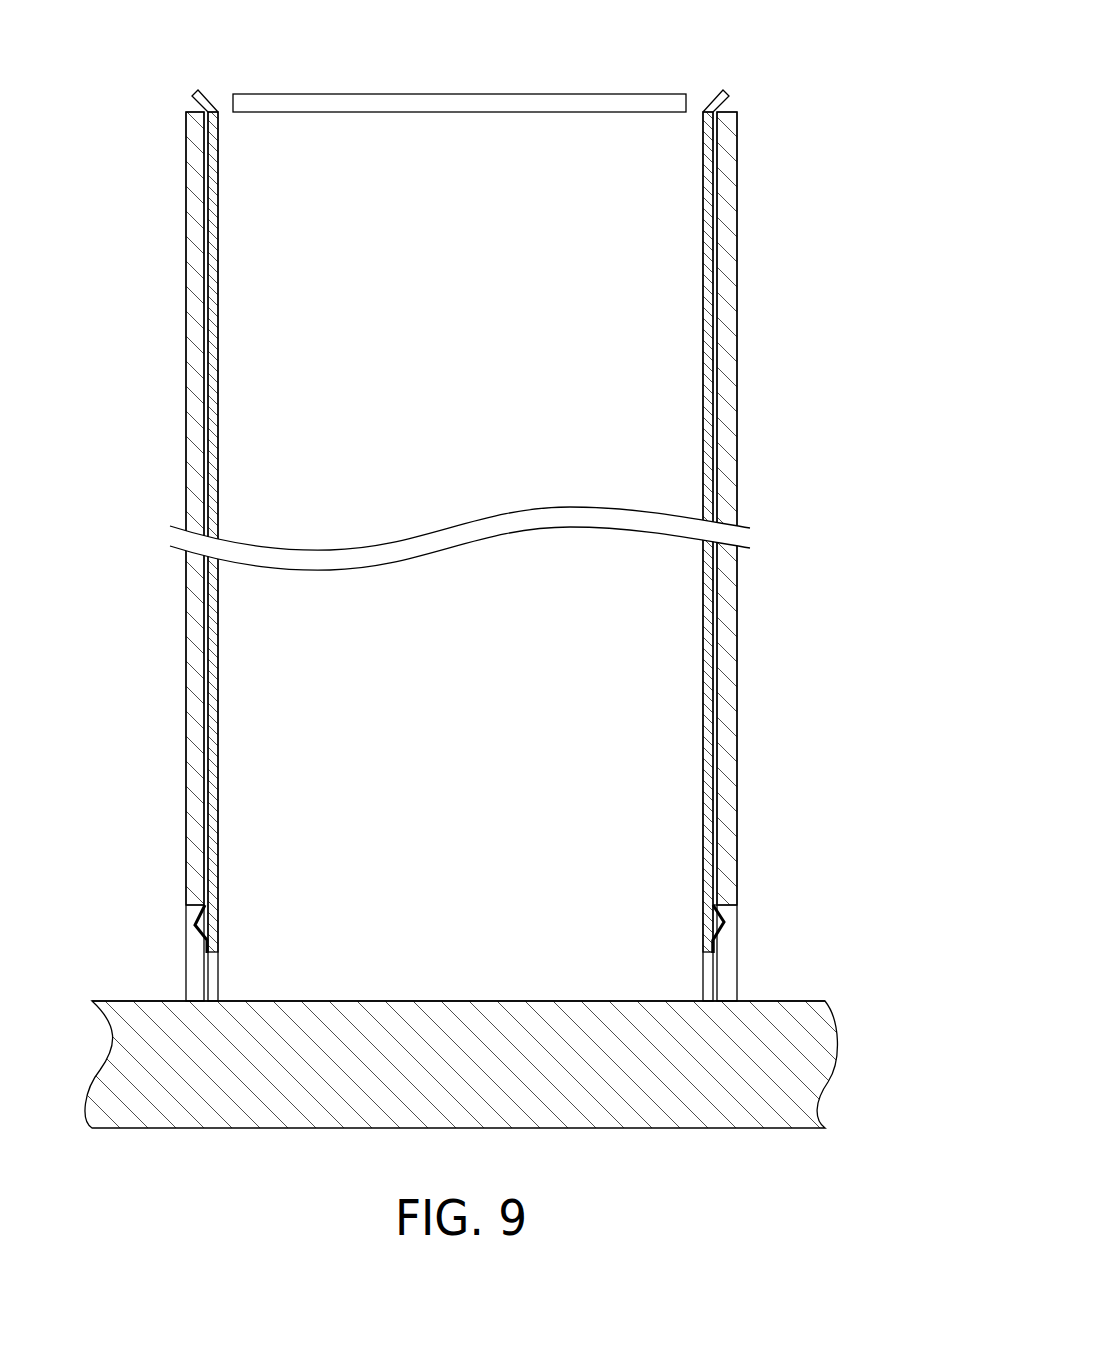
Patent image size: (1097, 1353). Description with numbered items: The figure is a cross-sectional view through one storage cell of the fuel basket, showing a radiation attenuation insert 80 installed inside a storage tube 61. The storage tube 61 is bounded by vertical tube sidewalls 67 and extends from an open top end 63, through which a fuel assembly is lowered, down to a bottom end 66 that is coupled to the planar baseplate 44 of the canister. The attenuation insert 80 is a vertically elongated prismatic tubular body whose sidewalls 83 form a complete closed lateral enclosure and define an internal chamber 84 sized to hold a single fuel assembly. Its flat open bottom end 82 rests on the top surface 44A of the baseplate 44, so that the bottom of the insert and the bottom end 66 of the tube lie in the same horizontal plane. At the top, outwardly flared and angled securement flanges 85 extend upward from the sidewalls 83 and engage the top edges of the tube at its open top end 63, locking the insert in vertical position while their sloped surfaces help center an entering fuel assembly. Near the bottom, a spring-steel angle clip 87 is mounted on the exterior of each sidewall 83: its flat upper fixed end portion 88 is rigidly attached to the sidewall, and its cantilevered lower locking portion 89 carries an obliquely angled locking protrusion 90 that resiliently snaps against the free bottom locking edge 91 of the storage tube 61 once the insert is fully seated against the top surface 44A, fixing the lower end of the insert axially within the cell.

The baseplate 44 is at (148, 1000).
The top surface of baseplate 44A is at (452, 998).
The storage tube 61 is at (772, 634).
The open top end 63 is at (779, 531).
The bottom end 66 is at (725, 1001).
The tube sidewall 67 is at (725, 385).
The radiation attenuation insert 80 is at (268, 640).
The open bottom end 82 is at (212, 1001).
The sidewall 83 is at (218, 418).
The internal chamber 84 is at (466, 732).
The securement flange 85 is at (633, 93).
The angle clip 87 is at (187, 928).
The fixed end portion 88 is at (715, 892).
The locking portion 89 is at (713, 945).
The locking protrusion 90 is at (725, 920).
The bottom locking edge 91 is at (195, 903).